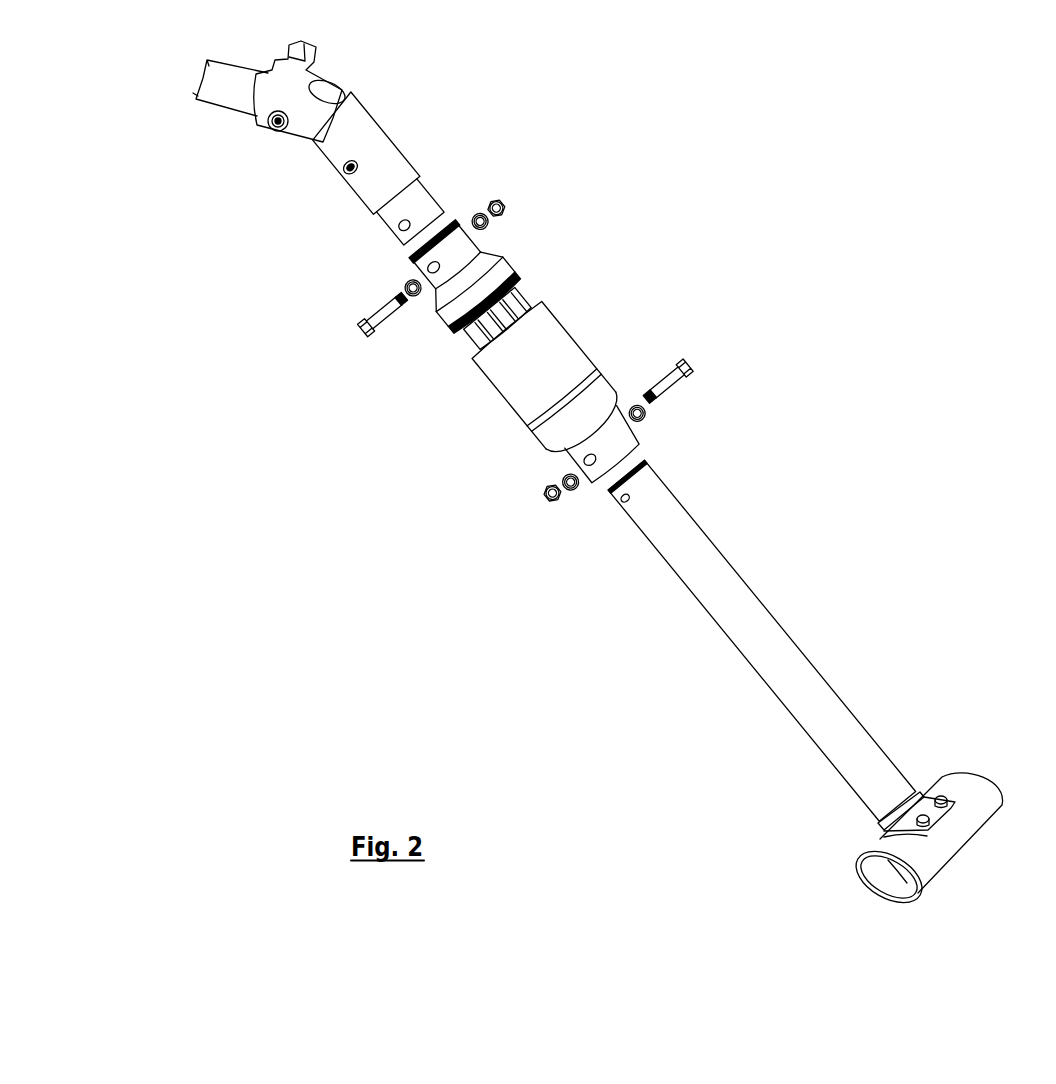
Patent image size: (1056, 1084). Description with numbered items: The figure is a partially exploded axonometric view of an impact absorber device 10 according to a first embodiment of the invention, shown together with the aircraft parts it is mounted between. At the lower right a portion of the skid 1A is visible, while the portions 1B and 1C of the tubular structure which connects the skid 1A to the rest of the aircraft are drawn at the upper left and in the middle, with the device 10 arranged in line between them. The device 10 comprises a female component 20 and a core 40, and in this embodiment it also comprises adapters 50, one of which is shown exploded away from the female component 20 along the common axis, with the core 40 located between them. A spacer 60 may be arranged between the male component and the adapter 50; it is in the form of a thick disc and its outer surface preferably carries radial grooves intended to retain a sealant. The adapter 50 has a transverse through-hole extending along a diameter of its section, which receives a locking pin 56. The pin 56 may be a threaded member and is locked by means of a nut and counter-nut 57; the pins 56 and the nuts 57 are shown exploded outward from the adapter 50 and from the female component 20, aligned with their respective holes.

The skid 1A is at (993, 752).
The portion of the tubular structure 1B is at (229, 98).
The portion of the tubular structure 1C is at (702, 646).
The impact absorber device 10 is at (547, 337).
The female component 20 is at (480, 401).
The core 40 is at (548, 284).
The adapter 50 is at (510, 240).
The locking pin 56 is at (378, 312).
The nut and counter-nut 57 is at (487, 197).
The spacer 60 is at (432, 337).